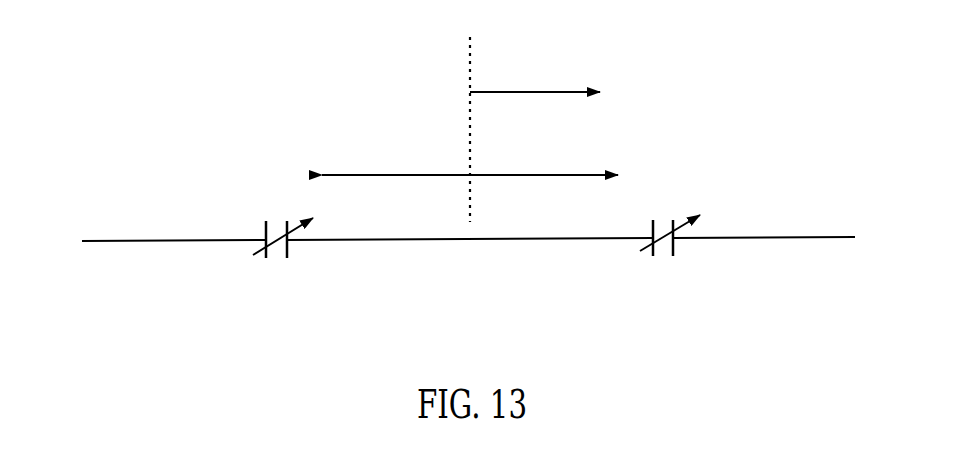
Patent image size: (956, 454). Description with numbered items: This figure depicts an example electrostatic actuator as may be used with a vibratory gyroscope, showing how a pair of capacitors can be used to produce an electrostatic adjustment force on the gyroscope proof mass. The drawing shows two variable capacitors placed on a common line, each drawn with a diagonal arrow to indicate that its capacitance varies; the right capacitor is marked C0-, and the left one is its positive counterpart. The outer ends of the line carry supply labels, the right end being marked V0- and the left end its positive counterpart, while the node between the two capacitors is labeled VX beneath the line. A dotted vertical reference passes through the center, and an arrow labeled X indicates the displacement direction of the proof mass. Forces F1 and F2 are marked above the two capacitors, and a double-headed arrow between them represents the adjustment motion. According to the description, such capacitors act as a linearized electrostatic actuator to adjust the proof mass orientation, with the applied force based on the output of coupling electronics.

The force on first capacitor F1 is at (275, 183).
The force on second capacitor F2 is at (661, 183).
The second variable capacitor C0- is at (670, 268).
The negative supply voltage V0- is at (792, 246).
The output voltage at center node VX is at (468, 163).
The displacement axis X is at (547, 95).